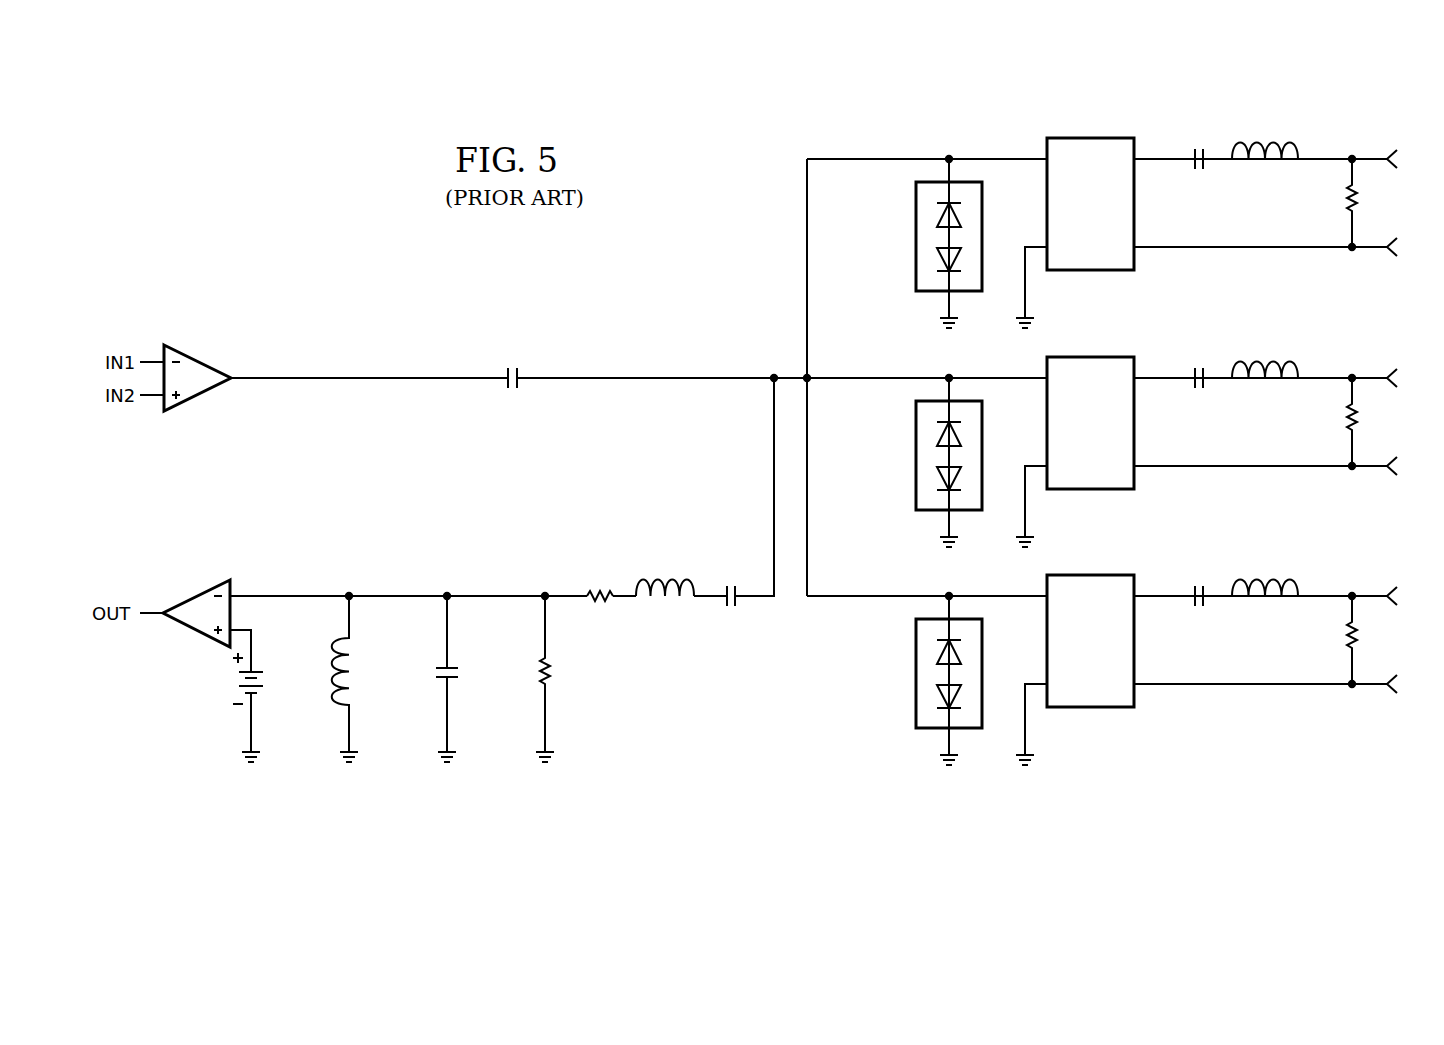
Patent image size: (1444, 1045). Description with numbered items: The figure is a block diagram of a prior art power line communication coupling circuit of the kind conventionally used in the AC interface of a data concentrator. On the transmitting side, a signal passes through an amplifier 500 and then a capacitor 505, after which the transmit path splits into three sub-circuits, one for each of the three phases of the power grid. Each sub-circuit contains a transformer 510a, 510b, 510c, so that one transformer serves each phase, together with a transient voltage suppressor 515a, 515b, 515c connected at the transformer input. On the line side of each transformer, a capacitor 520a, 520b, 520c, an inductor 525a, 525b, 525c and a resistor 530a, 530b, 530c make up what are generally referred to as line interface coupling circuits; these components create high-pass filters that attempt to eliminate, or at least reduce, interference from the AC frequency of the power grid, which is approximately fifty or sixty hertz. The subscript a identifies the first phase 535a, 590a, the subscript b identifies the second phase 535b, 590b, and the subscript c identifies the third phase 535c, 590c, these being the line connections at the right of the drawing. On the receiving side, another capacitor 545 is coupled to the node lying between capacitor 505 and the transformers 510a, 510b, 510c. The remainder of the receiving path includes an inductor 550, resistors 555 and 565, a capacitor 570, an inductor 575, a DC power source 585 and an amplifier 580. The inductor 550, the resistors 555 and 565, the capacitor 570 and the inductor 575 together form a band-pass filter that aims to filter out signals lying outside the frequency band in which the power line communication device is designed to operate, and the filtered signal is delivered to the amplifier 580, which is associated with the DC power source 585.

The amplifier 500 is at (198, 357).
The capacitor 505 is at (510, 365).
The transformer 510a is at (1118, 214).
The transformer 510b is at (1118, 433).
The transformer 510c is at (1118, 651).
The transient voltage suppressor 515a is at (915, 236).
The transient voltage suppressor 515b is at (915, 455).
The transient voltage suppressor 515c is at (915, 690).
The capacitor 520a is at (1199, 148).
The capacitor 520b is at (1199, 367).
The capacitor 520c is at (1199, 586).
The inductor 525a is at (1273, 142).
The inductor 525b is at (1273, 361).
The inductor 525c is at (1273, 580).
The resistor 530a is at (1347, 206).
The resistor 530b is at (1347, 425).
The resistor 530c is at (1347, 642).
The first phase 535a is at (1387, 152).
The second phase 535b is at (1387, 371).
The third phase 535c is at (1387, 607).
The first phase 590a is at (1387, 238).
The second phase 590b is at (1387, 472).
The third phase 590c is at (1387, 692).
The capacitor 545 is at (730, 605).
The inductor 550 is at (660, 605).
The resistor 555 is at (600, 605).
The resistor 565 is at (542, 673).
The capacitor 570 is at (437, 672).
The inductor 575 is at (330, 697).
The amplifier 580 is at (198, 595).
The DC power source 585 is at (230, 683).